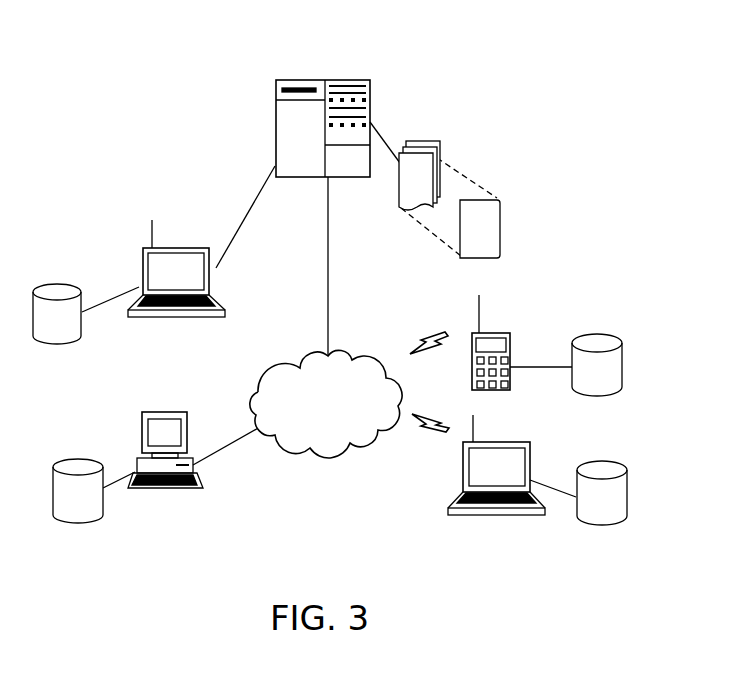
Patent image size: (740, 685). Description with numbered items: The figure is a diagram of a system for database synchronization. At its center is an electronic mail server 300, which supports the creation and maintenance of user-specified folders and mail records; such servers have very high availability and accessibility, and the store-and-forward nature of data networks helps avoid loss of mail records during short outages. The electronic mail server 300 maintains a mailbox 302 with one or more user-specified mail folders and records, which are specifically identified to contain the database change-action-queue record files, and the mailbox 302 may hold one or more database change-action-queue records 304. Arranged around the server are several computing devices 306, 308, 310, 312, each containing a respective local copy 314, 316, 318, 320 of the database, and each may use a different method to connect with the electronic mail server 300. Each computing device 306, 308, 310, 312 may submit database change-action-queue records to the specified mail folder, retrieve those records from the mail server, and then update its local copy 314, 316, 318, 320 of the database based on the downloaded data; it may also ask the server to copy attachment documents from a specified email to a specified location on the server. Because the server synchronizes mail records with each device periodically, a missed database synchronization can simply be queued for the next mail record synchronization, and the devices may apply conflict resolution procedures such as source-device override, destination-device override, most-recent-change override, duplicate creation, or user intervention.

The electronic mail server 300 is at (332, 93).
The mailbox 302 is at (436, 143).
The database change-action-queue record 304 is at (505, 194).
The computing device 306 is at (176, 249).
The computing device 308 is at (174, 419).
The computing device 310 is at (511, 327).
The computing device 312 is at (505, 445).
The local copy of the database 314 is at (70, 281).
The local copy of the database 316 is at (90, 457).
The local copy of the database 318 is at (610, 330).
The local copy of the database 320 is at (627, 465).